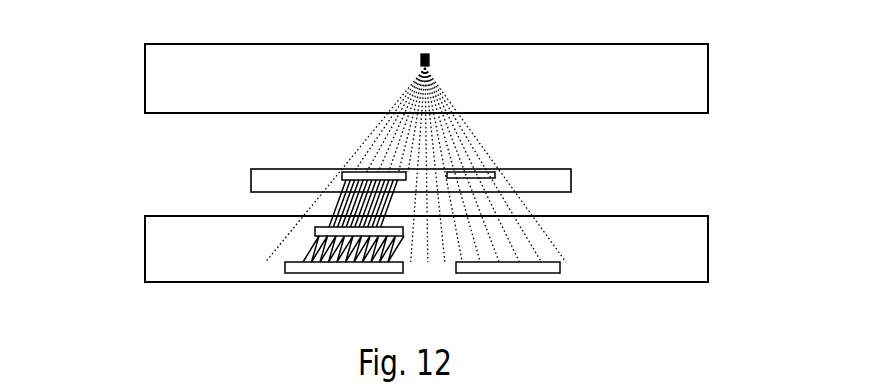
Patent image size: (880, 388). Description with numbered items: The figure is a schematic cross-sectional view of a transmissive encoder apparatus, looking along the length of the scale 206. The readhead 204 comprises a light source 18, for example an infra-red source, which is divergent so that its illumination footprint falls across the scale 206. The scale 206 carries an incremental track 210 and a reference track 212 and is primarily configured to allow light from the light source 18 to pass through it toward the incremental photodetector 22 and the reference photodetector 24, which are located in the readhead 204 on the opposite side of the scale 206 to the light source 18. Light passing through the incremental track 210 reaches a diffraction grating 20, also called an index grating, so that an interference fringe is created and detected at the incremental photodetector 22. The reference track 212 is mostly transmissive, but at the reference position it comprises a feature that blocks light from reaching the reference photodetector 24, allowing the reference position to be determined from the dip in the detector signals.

The light source 18 is at (430, 60).
The diffraction grating 20 is at (315, 230).
The incremental photodetector 22 is at (285, 267).
The reference photodetector 24 is at (563, 267).
The readhead 204 is at (145, 83).
The scale 206 is at (251, 178).
The optical element 210 is at (348, 167).
The reference track 212 is at (492, 173).